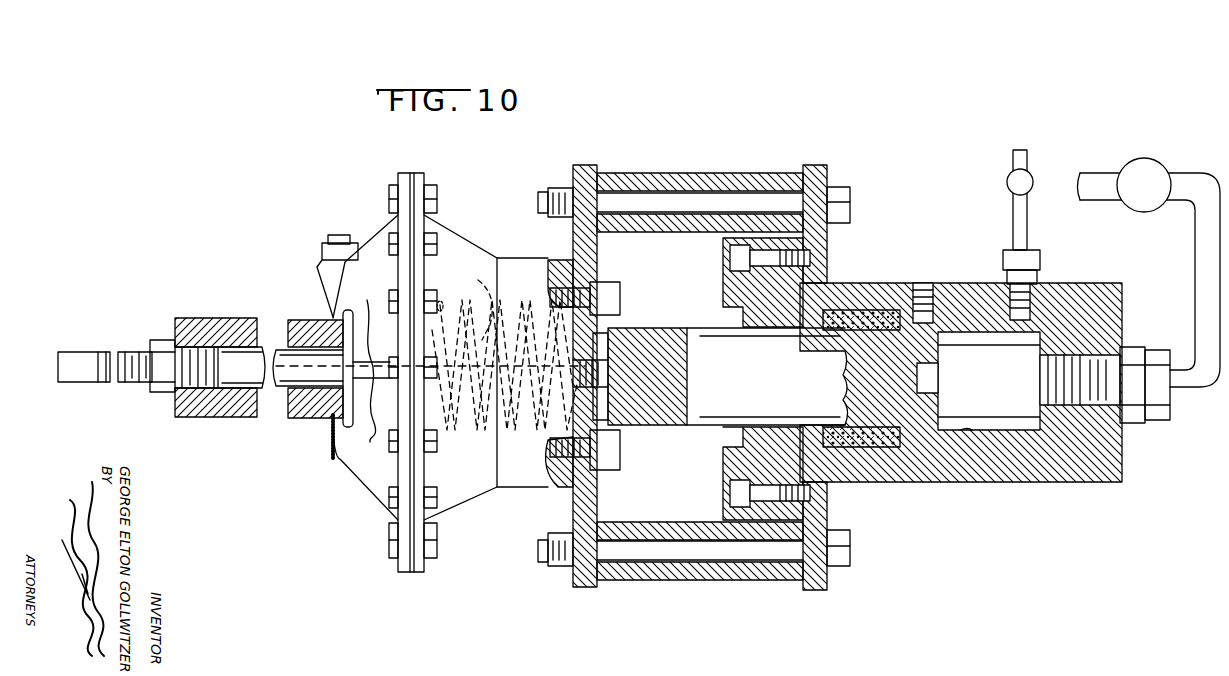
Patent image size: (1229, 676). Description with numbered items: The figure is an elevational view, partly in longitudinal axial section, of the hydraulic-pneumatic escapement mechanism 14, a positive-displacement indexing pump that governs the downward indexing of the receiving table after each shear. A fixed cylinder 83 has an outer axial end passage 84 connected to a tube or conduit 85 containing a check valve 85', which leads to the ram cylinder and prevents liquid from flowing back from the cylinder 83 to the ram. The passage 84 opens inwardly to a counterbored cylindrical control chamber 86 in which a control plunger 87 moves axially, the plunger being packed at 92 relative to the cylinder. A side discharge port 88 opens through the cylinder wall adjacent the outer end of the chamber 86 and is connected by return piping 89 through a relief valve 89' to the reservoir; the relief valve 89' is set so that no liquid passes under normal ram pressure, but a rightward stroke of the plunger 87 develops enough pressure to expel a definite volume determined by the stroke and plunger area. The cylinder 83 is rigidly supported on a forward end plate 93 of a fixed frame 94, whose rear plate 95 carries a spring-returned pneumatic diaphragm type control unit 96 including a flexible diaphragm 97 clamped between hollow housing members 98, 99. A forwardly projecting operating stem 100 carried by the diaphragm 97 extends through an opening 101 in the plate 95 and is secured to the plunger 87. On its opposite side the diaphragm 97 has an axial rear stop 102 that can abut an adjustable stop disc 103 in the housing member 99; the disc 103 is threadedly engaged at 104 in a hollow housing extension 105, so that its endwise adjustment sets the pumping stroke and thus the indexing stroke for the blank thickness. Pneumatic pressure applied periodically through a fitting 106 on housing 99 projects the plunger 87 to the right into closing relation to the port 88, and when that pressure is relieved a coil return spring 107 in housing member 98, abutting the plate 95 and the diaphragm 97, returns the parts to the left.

The hydraulic-pneumatic escapement mechanism 14 is at (859, 256).
The fixed cylinder 83 is at (918, 468).
The outer axial end passage 84 is at (1060, 405).
The tube or conduit 85 is at (1149, 280).
The check valve 85' is at (1146, 203).
The counterbored cylindrical control chamber 86 is at (975, 432).
The control plunger 87 is at (772, 381).
The side discharge port 88 is at (1018, 332).
The return piping 89 is at (1041, 235).
The relief valve 89' is at (1049, 164).
The packing 92 is at (888, 300).
The forward end plate 93 is at (820, 245).
The fixed frame 94 is at (690, 580).
The rear plate 95 is at (575, 501).
The pneumatic diaphragm type control unit 96 is at (440, 358).
The flexible diaphragm 97 is at (420, 175).
The hollow housing member 98 is at (452, 235).
The hollow housing member 99 is at (381, 245).
The operating stem 100 is at (460, 435).
The opening 101 is at (540, 425).
The axial rear stop 102 is at (370, 397).
The adjustable stop disc 103 is at (370, 440).
The threaded engagement 104 is at (215, 385).
The hollow housing extension 105 is at (202, 318).
The fitting 106 is at (322, 257).
The coil return spring 107 is at (476, 286).